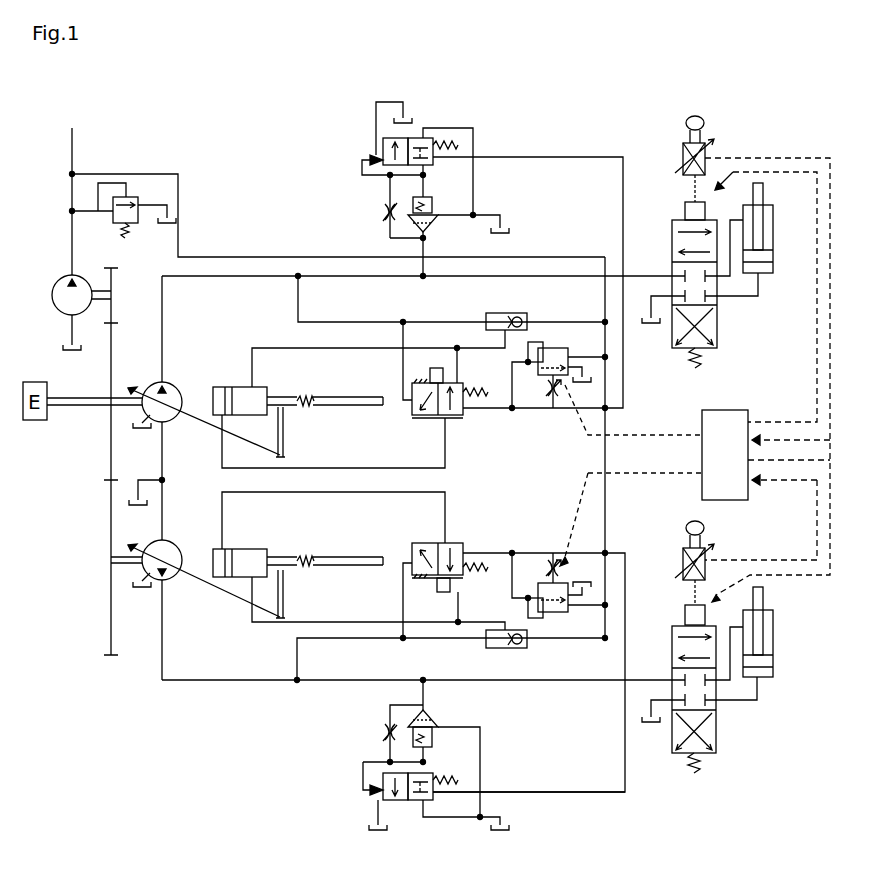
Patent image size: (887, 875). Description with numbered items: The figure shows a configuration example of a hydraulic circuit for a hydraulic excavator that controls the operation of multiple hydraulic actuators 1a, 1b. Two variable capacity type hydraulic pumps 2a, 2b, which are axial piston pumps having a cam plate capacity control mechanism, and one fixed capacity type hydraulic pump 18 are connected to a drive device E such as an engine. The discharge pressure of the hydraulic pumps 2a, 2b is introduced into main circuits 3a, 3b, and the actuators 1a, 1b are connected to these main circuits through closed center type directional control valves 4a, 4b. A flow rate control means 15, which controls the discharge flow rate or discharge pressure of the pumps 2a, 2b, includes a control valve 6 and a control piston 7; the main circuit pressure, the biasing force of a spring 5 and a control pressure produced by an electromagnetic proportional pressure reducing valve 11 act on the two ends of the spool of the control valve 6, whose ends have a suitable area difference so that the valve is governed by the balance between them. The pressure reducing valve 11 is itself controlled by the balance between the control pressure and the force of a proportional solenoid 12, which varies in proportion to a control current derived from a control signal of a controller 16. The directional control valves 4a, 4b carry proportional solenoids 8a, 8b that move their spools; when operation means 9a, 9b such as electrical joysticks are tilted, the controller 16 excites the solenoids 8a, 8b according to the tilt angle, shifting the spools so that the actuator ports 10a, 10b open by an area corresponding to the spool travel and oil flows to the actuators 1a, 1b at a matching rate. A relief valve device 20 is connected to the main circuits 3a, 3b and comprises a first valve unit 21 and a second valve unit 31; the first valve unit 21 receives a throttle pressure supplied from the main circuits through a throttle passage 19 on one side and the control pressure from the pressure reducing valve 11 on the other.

The hydraulic actuator 1a is at (783, 237).
The hydraulic actuator 1b is at (783, 642).
The variable capacity type hydraulic pump 2a is at (150, 383).
The variable capacity type hydraulic pump 2b is at (150, 541).
The main circuit 3a is at (358, 278).
The main circuit 3b is at (350, 683).
The closed center type directional control valve 4a is at (735, 320).
The closed center type directional control valve 4b is at (735, 727).
The spring 5 is at (470, 396).
The control valve 6 is at (384, 414).
The control piston 7 is at (245, 410).
The proportional solenoid 8a is at (685, 202).
The proportional solenoid 8b is at (685, 607).
The operation means 9a is at (683, 148).
The operation means 9b is at (683, 553).
The actuator port 10a is at (718, 279).
The actuator port 10b is at (717, 683).
The electromagnetic proportional pressure reducing valve 11 is at (534, 388).
The proportional solenoid 12 is at (554, 396).
The flow rate control means 15 is at (256, 427).
The controller 16 is at (735, 410).
The fixed capacity type hydraulic pump 18 is at (52, 303).
The throttle passage 19 is at (378, 210).
The relief valve device 20 is at (387, 171).
The first valve unit 21 is at (360, 147).
The second valve unit 31 is at (405, 196).